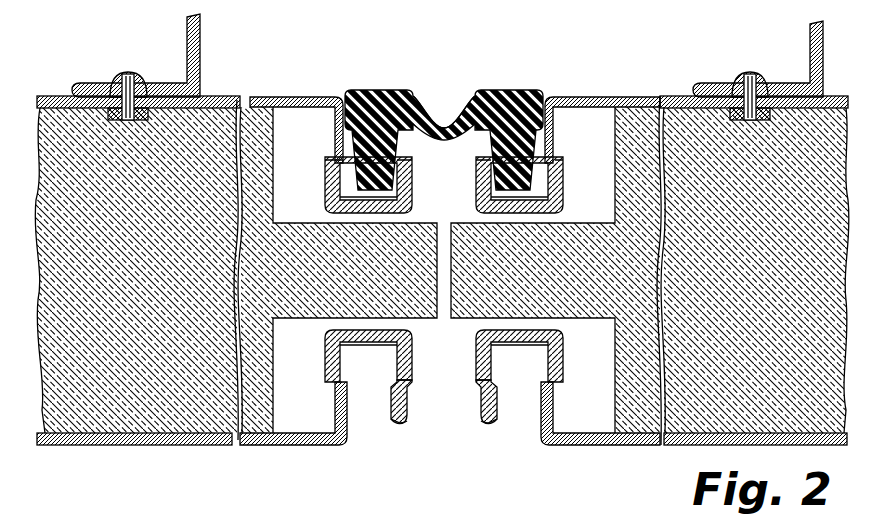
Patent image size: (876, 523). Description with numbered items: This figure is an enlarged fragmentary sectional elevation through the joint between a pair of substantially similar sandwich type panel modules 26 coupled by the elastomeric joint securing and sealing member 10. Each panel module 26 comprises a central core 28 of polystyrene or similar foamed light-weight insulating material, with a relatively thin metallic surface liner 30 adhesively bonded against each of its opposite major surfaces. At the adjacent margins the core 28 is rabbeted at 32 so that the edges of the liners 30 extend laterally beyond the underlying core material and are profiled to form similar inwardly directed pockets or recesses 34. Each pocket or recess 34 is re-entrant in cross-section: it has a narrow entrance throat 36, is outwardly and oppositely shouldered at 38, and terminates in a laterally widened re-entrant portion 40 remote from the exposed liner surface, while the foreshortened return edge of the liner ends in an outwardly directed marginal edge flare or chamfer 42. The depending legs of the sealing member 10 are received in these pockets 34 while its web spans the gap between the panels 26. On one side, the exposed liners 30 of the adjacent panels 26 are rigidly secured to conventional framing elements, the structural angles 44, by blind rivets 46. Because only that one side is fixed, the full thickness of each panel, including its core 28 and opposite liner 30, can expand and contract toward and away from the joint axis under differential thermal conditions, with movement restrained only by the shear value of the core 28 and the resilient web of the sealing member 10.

The joint securing and sealing member 10 is at (520, 88).
The sandwich type panel module 26 is at (217, 96).
The central core 28 is at (834, 138).
The metallic surface liner 30 is at (50, 96).
The rabbet 32 is at (290, 117).
The pocket or recess 34 is at (351, 194).
The narrow entrance throat 36 is at (371, 400).
The shoulder 38 is at (332, 163).
The laterally widened re-entrant portion 40 is at (388, 193).
The marginal edge flare or chamfer 42 is at (397, 90).
The structural angle 44 is at (186, 50).
The blind rivet 46 is at (117, 75).